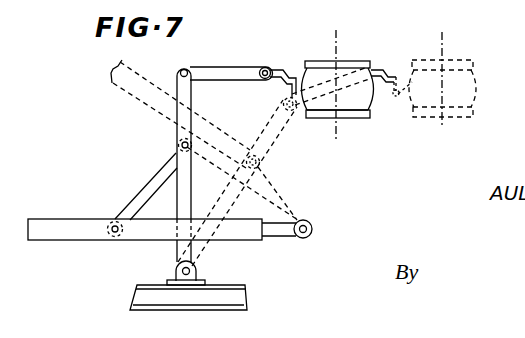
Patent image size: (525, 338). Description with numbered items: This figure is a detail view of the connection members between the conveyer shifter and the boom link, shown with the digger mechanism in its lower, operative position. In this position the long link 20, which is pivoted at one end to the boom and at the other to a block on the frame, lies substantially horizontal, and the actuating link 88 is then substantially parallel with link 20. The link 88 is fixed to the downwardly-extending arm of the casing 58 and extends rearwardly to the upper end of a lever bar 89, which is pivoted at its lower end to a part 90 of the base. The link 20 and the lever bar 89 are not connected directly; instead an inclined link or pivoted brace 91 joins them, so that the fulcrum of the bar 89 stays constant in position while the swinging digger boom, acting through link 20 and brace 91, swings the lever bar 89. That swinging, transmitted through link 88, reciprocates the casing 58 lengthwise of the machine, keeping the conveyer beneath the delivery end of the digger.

The link 20 is at (63, 240).
The casing 58 is at (369, 108).
The link 88 is at (209, 69).
The lever bar 89 is at (192, 184).
The part of the base 90 is at (198, 276).
The inclined link or pivoted brace 91 is at (152, 185).